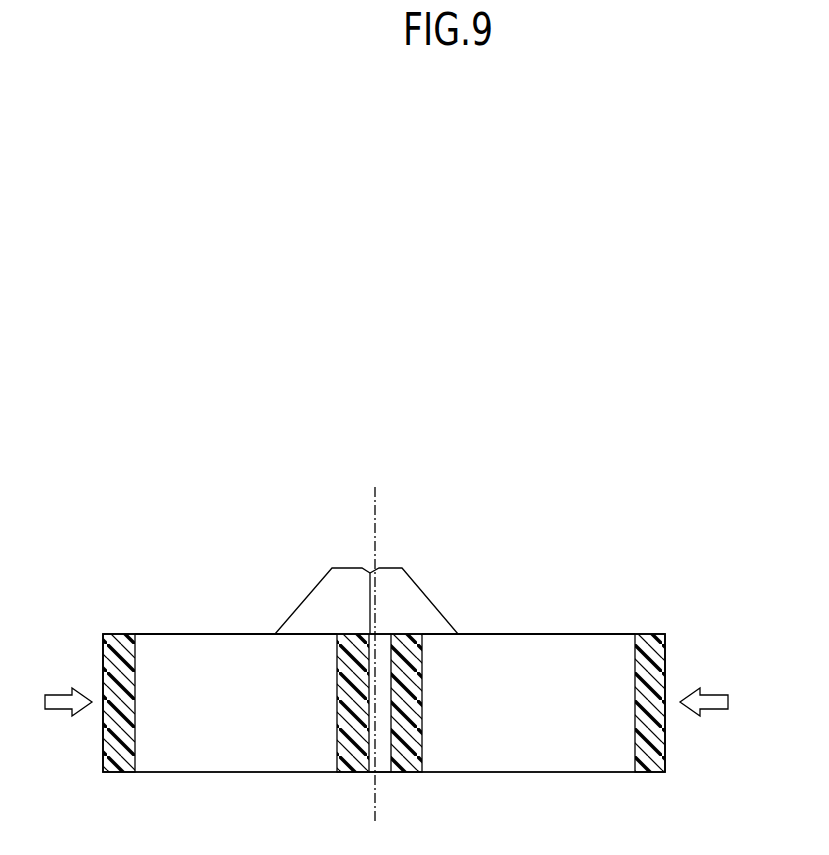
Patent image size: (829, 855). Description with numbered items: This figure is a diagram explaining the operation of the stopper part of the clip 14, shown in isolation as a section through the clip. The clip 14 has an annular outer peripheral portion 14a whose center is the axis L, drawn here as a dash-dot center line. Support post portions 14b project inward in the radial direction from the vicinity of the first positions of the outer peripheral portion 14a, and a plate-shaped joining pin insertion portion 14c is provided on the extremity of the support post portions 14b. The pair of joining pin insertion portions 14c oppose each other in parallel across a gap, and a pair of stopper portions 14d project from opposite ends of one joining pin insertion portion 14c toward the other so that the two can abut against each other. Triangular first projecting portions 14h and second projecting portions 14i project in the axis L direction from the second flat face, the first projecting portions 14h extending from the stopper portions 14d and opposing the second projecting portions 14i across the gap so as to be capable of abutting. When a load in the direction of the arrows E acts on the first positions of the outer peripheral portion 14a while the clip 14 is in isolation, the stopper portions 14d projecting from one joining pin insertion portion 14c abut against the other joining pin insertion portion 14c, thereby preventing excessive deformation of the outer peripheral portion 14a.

The clip 14 is at (607, 634).
The outer peripheral portion 14a is at (667, 663).
The support post portion 14b is at (236, 652).
The joining pin insertion portion 14c is at (342, 682).
The stopper portion 14d is at (382, 760).
The first projecting portion 14h is at (408, 600).
The second projecting portion 14i is at (321, 598).
The axis L is at (376, 505).
The load direction arrow E is at (386, 695).